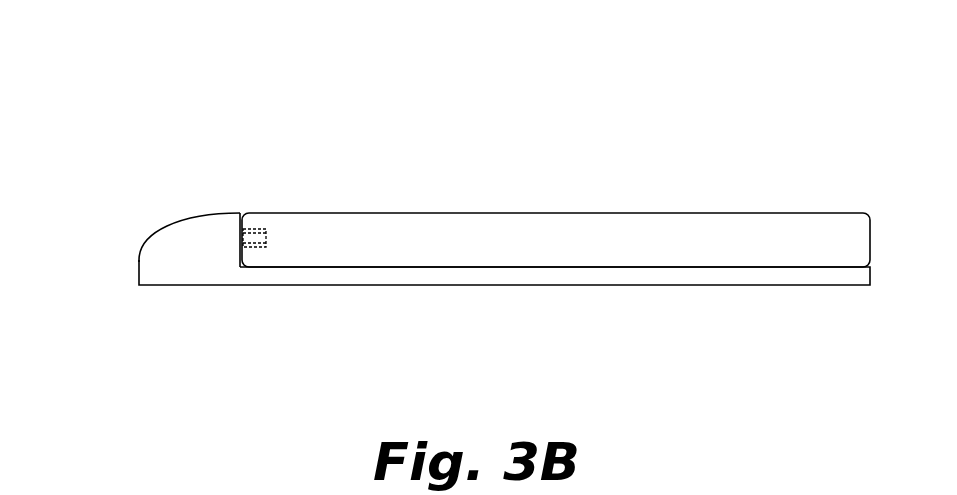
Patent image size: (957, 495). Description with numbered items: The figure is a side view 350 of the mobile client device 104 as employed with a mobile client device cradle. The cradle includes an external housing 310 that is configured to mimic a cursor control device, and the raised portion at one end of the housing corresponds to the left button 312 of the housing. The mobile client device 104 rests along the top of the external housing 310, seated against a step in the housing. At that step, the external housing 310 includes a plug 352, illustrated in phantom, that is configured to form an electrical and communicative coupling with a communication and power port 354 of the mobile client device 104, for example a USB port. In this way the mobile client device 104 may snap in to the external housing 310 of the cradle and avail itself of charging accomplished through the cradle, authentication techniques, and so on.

The side view 350 is at (173, 125).
The external housing 310 is at (473, 284).
The left button 312 is at (148, 245).
The plug 352 is at (240, 232).
The mobile client device 104 is at (438, 232).
The communication and power port 354 is at (265, 240).